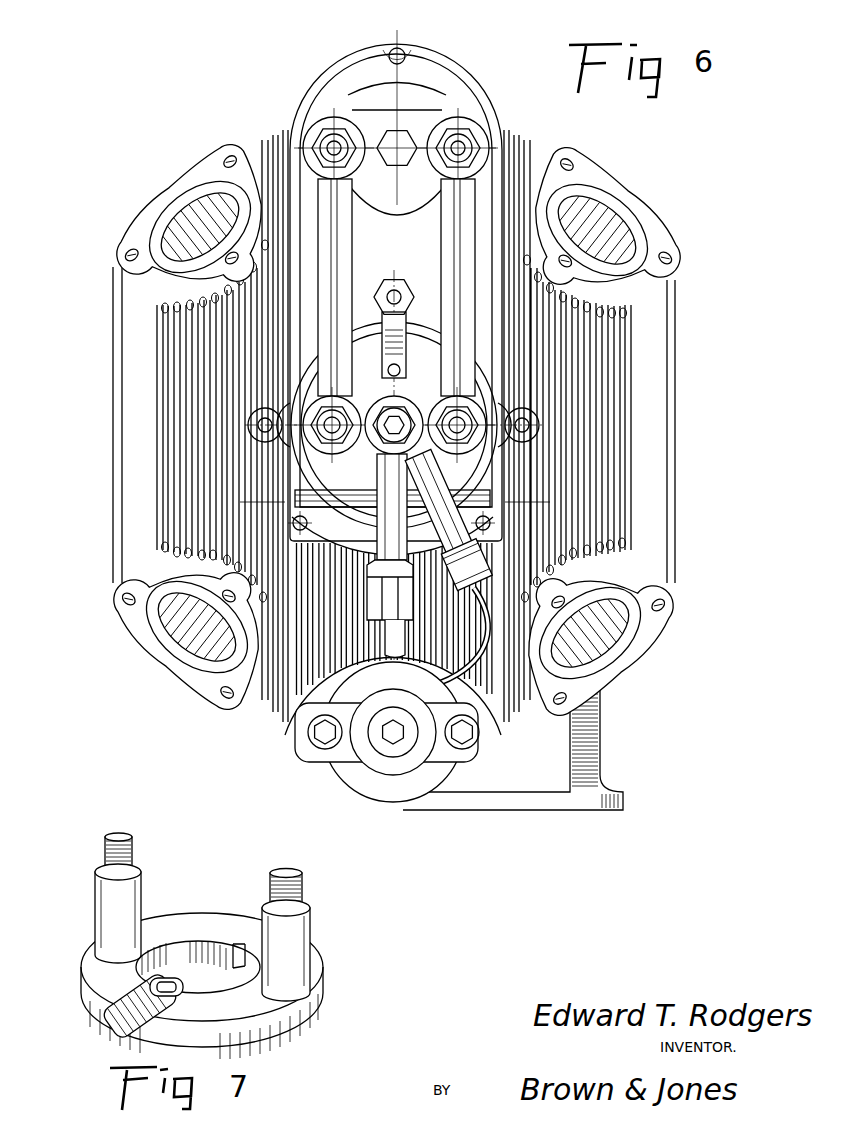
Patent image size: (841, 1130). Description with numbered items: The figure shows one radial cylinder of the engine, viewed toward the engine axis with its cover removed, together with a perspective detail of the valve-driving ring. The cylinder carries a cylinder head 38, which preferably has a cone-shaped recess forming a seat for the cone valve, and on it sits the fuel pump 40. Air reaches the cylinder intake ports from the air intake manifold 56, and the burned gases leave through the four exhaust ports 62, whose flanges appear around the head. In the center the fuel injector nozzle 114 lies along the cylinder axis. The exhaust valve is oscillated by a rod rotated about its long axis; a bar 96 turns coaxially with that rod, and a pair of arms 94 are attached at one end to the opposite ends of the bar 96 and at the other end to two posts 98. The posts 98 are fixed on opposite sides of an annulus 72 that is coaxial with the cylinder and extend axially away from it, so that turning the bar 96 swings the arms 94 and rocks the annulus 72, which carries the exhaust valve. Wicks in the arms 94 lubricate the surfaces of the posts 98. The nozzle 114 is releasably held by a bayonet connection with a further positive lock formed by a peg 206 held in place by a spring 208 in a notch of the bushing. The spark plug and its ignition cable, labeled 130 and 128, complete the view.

In FIG. 6, the cylinder head 38 is at (677, 408).
In FIG. 6, the fuel pump 40 is at (357, 776).
In FIG. 6, the air intake manifold 56 is at (558, 760).
In FIG. 6, the exhaust port 62 is at (172, 205).
In FIG. 6, the annulus 72 is at (394, 425).
In FIG. 7, the annulus 72 is at (331, 967).
In FIG. 6, the arm 94 is at (455, 242).
In FIG. 6, the bar 96 is at (418, 122).
In FIG. 6, the post 98 is at (345, 413).
In FIG. 7, the post 98 is at (290, 937).
In FIG. 6, the fuel injector nozzle 114 is at (380, 477).
In FIG. 6, the ignition cable 128 is at (453, 668).
In FIG. 6, the spark plug 130 is at (393, 645).
In FIG. 7, the peg 206 is at (167, 985).
In FIG. 6, the spring 208 is at (390, 337).
In FIG. 7, the spring 208 is at (120, 997).